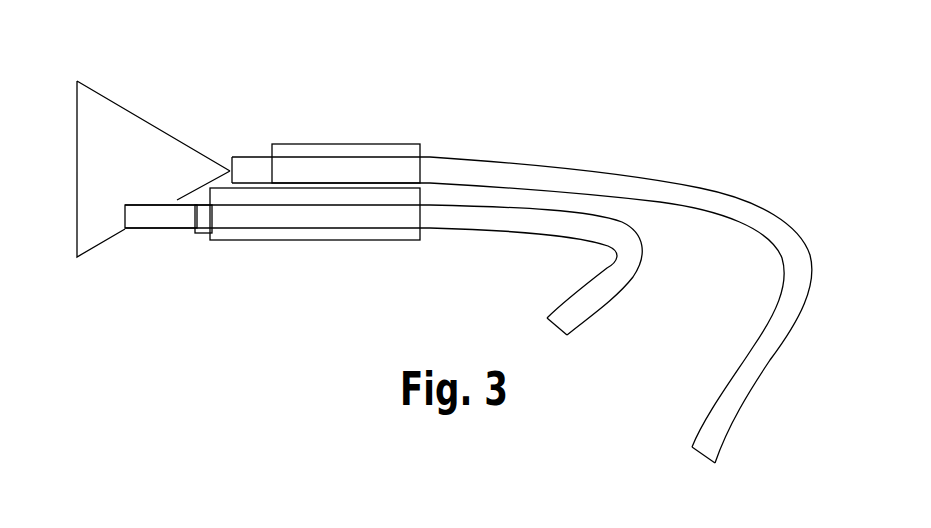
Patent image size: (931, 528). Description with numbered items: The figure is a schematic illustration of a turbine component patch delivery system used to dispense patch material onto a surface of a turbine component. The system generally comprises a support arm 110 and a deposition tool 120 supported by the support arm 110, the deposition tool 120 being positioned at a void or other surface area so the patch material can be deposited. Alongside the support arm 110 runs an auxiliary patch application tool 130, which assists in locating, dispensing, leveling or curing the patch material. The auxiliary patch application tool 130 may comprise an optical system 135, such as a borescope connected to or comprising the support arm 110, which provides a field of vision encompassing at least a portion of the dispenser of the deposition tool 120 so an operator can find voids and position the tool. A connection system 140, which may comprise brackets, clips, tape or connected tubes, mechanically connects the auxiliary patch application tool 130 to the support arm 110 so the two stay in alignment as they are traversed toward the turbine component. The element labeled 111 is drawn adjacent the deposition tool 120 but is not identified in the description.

The support arm 110 is at (492, 230).
The fiber end section 111 is at (196, 233).
The deposition tool 120 is at (127, 229).
The auxiliary patch application tool 130 is at (523, 167).
The optical system 135 is at (128, 118).
The connection system 140 is at (345, 145).